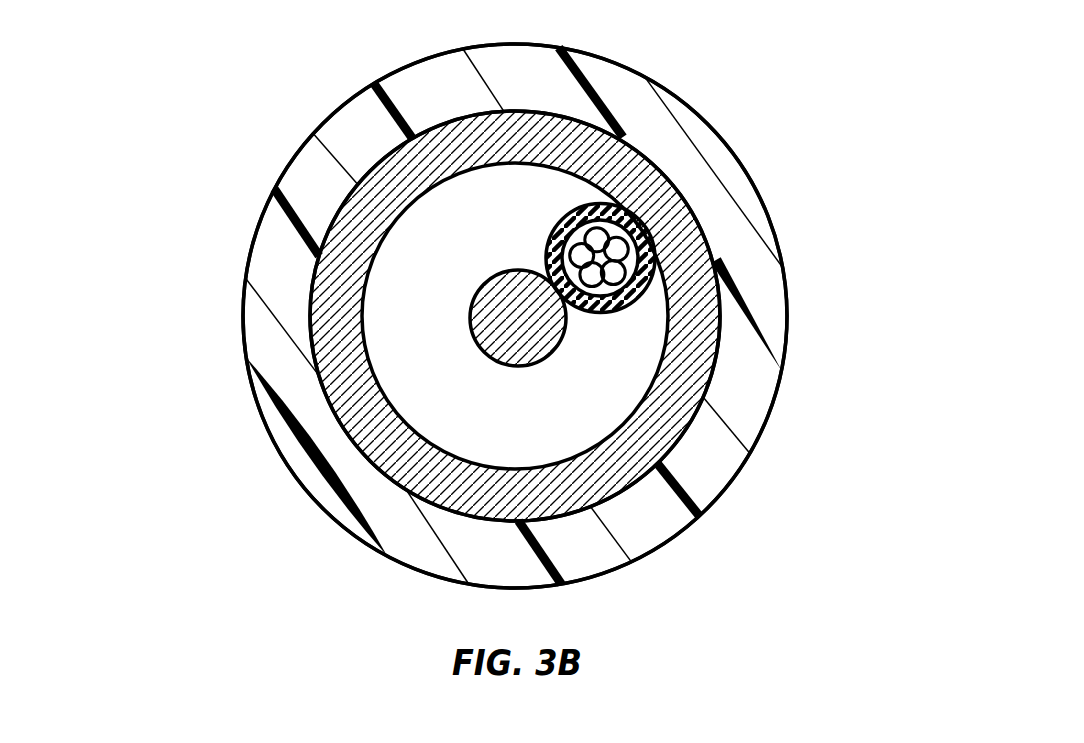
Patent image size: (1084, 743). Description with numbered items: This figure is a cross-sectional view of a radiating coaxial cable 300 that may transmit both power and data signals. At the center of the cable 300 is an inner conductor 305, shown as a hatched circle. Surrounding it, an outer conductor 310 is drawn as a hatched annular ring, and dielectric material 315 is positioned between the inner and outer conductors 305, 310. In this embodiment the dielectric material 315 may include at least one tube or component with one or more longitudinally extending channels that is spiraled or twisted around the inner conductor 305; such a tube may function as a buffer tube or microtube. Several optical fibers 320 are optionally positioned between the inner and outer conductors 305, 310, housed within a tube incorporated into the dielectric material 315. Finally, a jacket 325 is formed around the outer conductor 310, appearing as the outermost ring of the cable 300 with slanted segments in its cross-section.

The coaxial cable 300 is at (243, 120).
The inner conductor 305 is at (535, 328).
The outer conductor 310 is at (683, 360).
The dielectric material 315 is at (650, 232).
The optical fibers 320 is at (632, 261).
The jacket 325 is at (690, 145).